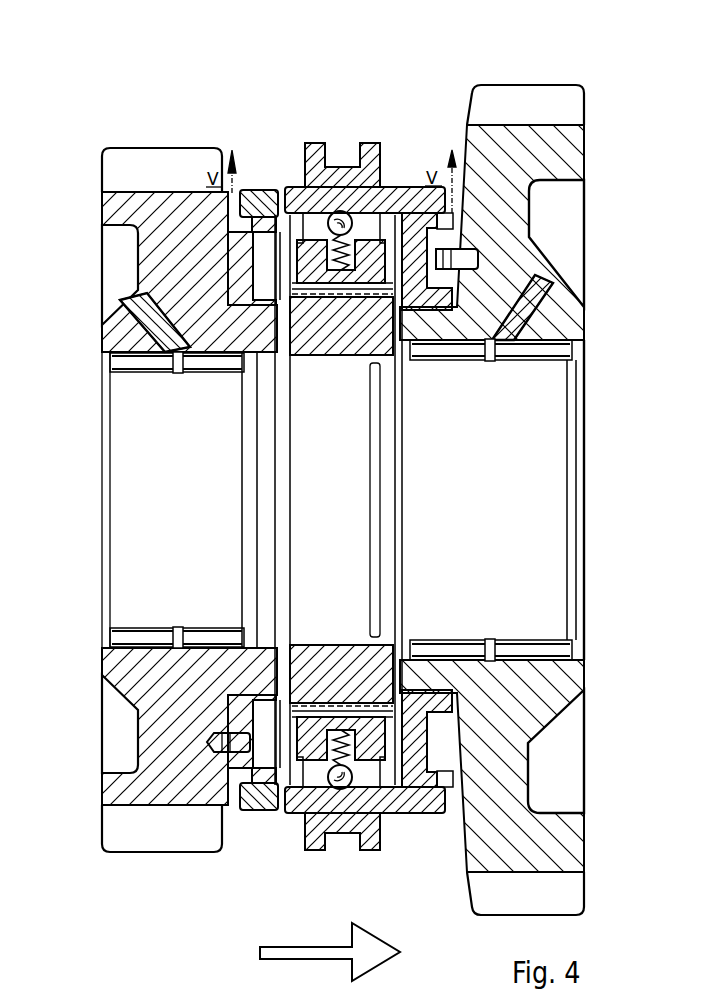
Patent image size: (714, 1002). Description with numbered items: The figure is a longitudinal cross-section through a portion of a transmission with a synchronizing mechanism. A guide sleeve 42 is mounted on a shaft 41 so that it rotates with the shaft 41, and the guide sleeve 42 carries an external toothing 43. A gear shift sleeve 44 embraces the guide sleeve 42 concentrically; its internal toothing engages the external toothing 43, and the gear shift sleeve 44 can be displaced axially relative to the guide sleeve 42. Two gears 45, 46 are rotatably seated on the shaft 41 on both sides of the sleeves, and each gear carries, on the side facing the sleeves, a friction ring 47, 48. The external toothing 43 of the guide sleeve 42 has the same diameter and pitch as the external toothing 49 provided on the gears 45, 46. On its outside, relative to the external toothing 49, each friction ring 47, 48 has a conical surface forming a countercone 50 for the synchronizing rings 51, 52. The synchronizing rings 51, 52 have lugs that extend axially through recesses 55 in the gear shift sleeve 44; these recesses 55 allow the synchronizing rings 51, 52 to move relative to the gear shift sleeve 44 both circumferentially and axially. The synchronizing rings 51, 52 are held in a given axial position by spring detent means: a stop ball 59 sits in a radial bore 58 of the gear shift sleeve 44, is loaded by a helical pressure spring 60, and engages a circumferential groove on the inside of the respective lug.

The shaft 41 is at (508, 490).
The guide sleeve 42 is at (275, 375).
The external toothing 43 is at (372, 297).
The gear shift sleeve 44 is at (370, 150).
The gear 45 is at (543, 100).
The gear 46 is at (133, 160).
The friction ring 47 is at (457, 245).
The friction ring 48 is at (232, 257).
The external toothing 49 is at (135, 322).
The countercone 50 is at (450, 228).
The synchronizing ring 51 is at (410, 213).
The synchronizing ring 52 is at (255, 190).
The recess 55 is at (286, 205).
The radial bore 58 is at (340, 297).
The stop ball 59 is at (293, 210).
The helical pressure spring 60 is at (280, 290).